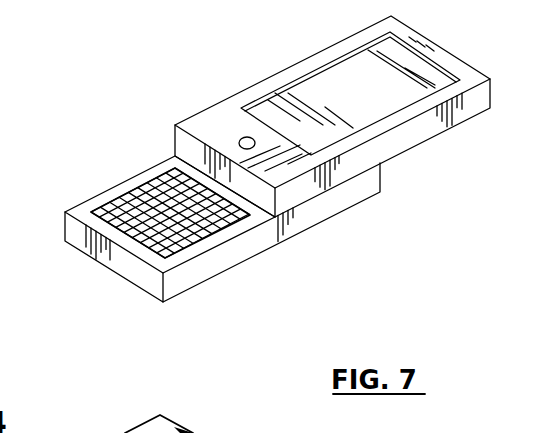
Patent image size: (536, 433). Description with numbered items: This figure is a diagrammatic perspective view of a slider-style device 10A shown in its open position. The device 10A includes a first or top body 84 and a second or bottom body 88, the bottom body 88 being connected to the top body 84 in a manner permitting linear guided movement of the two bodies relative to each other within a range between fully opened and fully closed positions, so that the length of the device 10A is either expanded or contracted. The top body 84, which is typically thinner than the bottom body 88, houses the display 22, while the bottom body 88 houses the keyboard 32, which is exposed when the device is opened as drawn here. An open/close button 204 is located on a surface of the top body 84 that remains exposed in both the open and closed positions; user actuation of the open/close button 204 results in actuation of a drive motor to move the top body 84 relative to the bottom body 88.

The slider-style device 10A is at (135, 123).
The display 22 is at (333, 80).
The keyboard 32 is at (138, 203).
The top body 84 is at (235, 92).
The bottom body 88 is at (250, 258).
The open/close button 204 is at (240, 139).